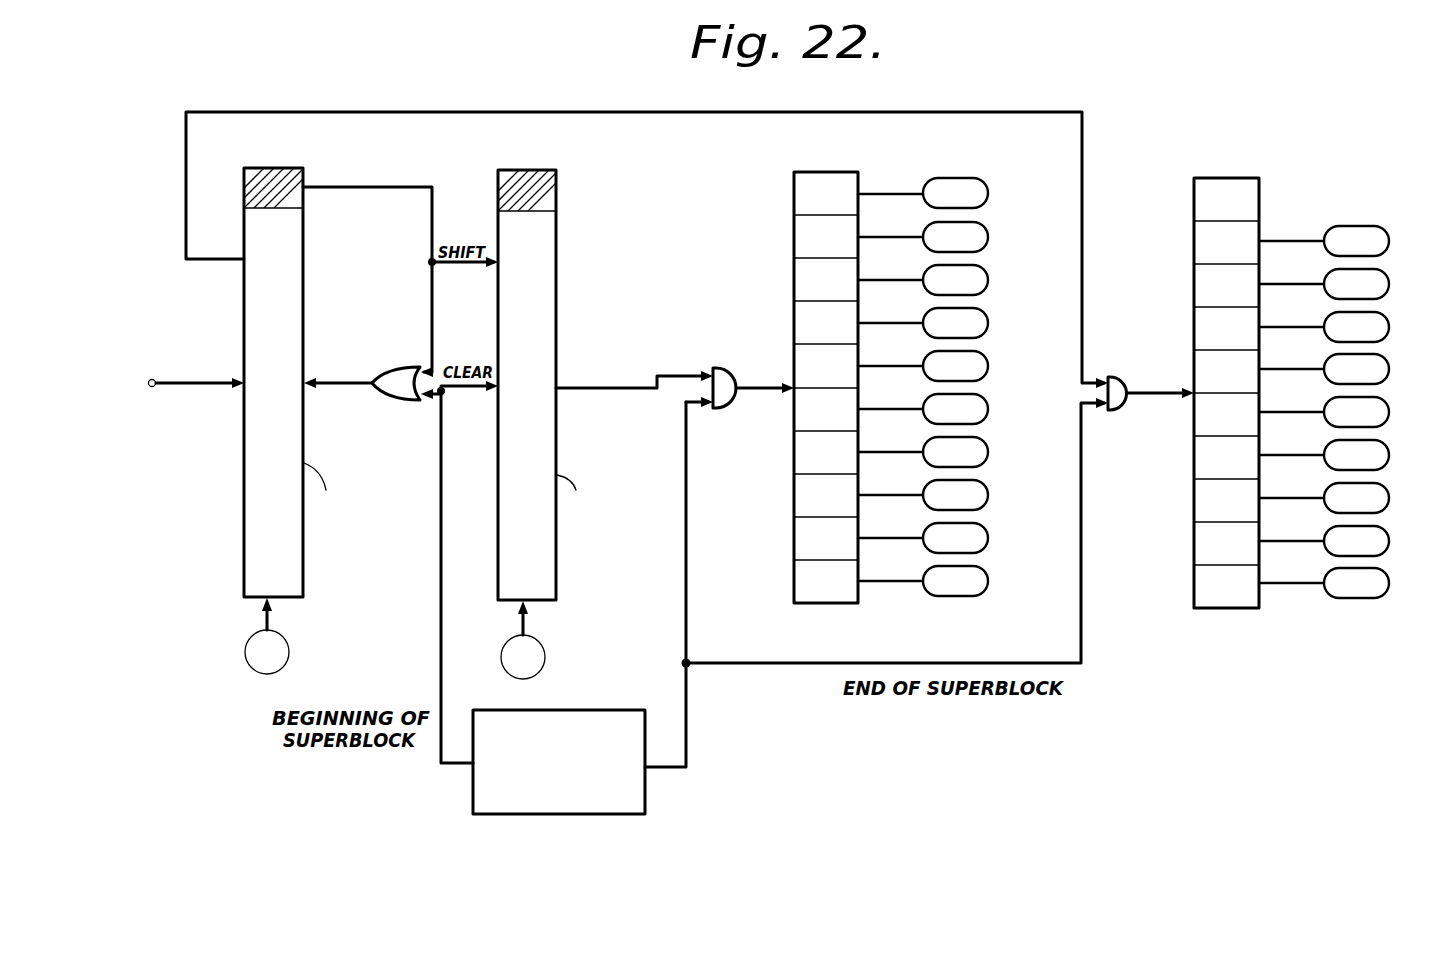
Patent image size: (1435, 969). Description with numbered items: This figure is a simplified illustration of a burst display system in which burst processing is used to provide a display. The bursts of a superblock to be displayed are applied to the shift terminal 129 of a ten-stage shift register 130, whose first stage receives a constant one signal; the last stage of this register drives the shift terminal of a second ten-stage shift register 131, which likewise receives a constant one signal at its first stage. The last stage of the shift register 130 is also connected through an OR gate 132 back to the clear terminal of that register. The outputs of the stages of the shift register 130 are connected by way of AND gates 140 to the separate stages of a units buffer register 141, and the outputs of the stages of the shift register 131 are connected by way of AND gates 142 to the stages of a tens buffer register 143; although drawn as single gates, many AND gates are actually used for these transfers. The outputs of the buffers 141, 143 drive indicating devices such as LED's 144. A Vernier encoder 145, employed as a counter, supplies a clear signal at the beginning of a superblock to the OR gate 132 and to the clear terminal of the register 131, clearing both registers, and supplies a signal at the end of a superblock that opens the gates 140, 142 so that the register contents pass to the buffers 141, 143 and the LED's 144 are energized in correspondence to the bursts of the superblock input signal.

The shift terminal 129 is at (152, 383).
The shift register 130 is at (244, 513).
The shift register 131 is at (558, 249).
The OR gate 132 is at (392, 400).
The AND gates 140 is at (1116, 378).
The units buffer register 141 is at (1239, 178).
The AND gates 142 is at (757, 332).
The tens buffer register 143 is at (794, 193).
The LED's 144 is at (978, 222).
The Vernier encoder 145 is at (646, 803).